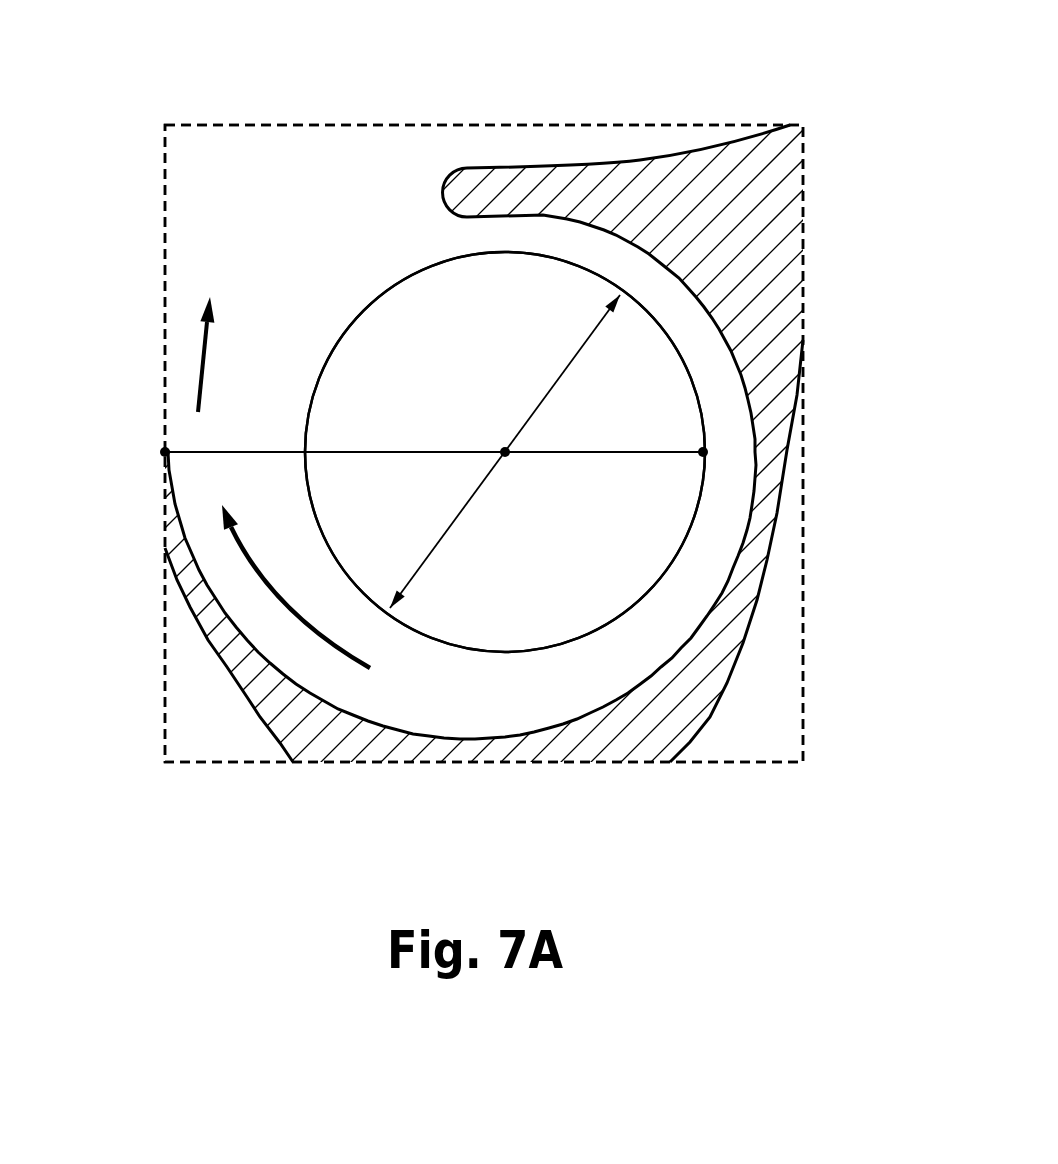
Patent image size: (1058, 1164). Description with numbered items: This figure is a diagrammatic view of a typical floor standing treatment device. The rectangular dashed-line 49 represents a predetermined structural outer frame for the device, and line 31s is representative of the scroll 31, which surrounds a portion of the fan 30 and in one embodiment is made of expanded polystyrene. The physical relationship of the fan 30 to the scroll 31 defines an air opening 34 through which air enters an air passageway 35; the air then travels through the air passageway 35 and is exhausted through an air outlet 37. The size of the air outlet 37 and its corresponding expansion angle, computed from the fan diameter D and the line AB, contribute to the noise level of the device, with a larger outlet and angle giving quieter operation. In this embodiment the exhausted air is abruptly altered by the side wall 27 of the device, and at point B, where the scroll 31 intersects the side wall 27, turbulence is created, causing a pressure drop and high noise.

The side wall 27 is at (150, 256).
The rectangular dashed-line 49 is at (658, 125).
The scroll 31 is at (743, 210).
The line representative of the scroll 31s is at (453, 170).
The fan 30 is at (703, 470).
The air opening 34 is at (457, 253).
The air passageway 35 is at (736, 425).
The air outlet 37 is at (267, 501).